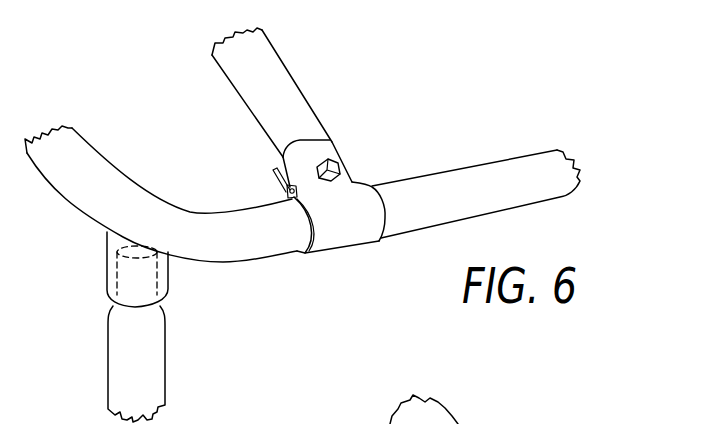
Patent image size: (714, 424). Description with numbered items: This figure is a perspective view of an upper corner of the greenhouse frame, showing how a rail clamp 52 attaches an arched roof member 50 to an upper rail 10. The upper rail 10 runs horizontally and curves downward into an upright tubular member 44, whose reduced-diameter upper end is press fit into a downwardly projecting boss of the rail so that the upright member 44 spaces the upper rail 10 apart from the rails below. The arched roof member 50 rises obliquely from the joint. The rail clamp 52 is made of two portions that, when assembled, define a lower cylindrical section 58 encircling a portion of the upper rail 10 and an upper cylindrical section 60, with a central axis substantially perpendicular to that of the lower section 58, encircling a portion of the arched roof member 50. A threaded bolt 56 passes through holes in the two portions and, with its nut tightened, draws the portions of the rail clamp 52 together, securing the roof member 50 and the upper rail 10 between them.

The upper rail 10 is at (532, 162).
The upright tubular member 44 is at (118, 359).
The arched roof member 50 is at (294, 78).
The rail clamp 52 is at (367, 234).
The threaded bolt 56 is at (338, 165).
The lower cylindrical section 58 is at (323, 252).
The upper cylindrical section 60 is at (328, 141).